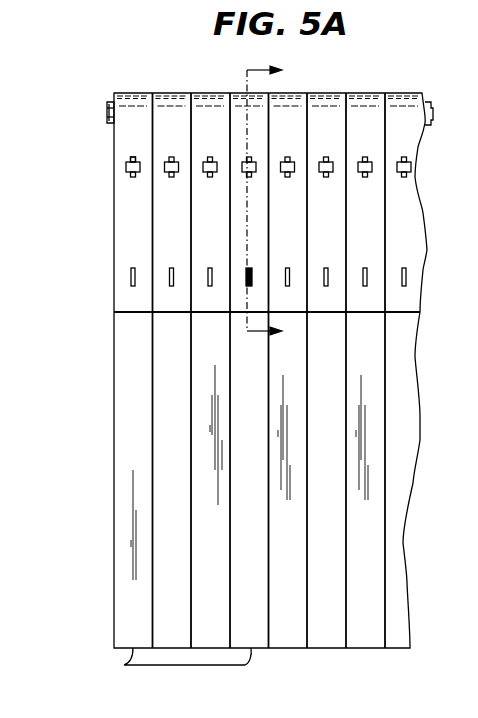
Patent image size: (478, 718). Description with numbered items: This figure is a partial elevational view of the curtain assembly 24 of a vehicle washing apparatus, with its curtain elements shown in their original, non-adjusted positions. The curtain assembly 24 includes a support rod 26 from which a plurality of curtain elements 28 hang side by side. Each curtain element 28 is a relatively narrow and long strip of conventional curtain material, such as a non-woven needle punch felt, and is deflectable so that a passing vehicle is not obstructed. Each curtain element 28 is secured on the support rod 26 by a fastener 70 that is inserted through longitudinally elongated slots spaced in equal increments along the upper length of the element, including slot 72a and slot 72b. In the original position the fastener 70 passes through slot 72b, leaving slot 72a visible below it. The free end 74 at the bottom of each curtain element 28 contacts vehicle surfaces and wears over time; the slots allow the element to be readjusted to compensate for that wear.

The curtain assembly 24 is at (172, 66).
The support rod 26 is at (107, 111).
The curtain element 28 is at (200, 430).
The fastener 70 is at (125, 167).
The slot 72a is at (131, 277).
The slot 72b is at (130, 160).
The free end 74 is at (135, 665).